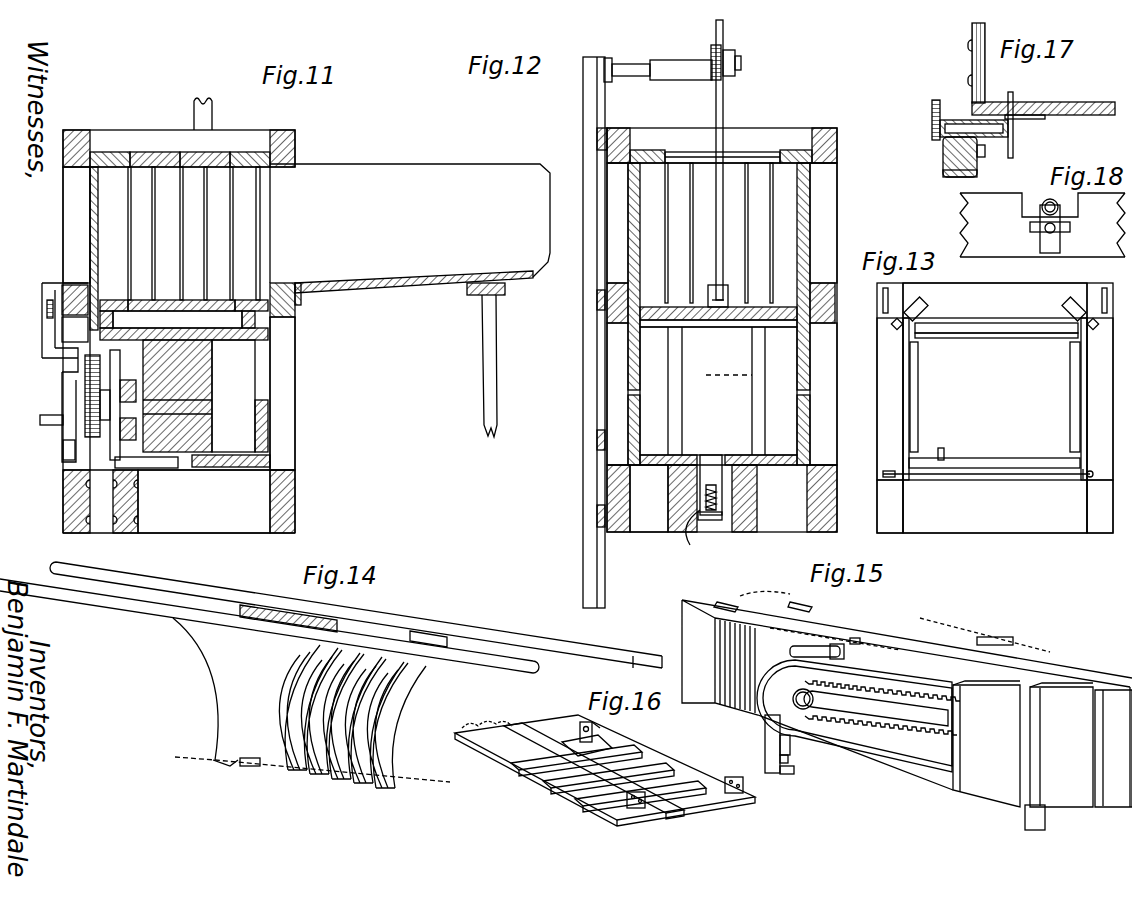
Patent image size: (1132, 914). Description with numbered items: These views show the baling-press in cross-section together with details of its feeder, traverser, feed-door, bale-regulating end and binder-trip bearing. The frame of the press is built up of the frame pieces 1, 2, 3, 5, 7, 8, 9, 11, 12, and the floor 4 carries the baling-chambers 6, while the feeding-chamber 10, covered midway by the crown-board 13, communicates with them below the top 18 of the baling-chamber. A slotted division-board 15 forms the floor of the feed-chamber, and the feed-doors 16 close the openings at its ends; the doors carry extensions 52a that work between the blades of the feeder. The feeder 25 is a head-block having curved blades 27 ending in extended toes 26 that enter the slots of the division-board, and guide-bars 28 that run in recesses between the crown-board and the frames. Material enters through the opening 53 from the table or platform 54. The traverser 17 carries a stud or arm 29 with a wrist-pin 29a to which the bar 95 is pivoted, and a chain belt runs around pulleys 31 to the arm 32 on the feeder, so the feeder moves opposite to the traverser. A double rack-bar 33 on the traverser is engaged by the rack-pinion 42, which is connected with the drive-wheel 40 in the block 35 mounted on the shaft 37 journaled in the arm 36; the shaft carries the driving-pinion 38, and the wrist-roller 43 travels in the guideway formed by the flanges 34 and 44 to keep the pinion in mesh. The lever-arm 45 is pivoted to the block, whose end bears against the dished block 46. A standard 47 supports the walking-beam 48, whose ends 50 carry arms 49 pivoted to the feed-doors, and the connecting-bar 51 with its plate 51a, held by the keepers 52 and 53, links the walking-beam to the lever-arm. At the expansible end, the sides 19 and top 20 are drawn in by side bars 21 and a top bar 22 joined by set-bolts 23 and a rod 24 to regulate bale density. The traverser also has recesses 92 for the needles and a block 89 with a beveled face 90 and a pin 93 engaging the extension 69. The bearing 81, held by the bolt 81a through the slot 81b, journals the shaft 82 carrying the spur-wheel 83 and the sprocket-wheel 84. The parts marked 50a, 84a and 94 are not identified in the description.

In FIG. 11, the frame-piece 1 is at (63, 512).
In FIG. 12, the frame-piece 1 is at (645, 520).
In FIG. 17, the frame-piece 1 is at (950, 178).
In FIG. 18, the frame-piece 1 is at (1042, 225).
In FIG. 13, the frame-piece 1 is at (995, 506).
In FIG. 11, the frame 2 is at (204, 501).
In FIG. 12, the frame 2 is at (649, 498).
In FIG. 13, the frame 2 is at (995, 506).
In FIG. 11, the frame 3 is at (138, 510).
In FIG. 12, the frame 3 is at (668, 506).
In FIG. 11, the floor 4 is at (215, 467).
In FIG. 12, the floor 4 is at (692, 456).
In FIG. 17, the floor 4 is at (1078, 102).
In FIG. 13, the floor 4 is at (988, 461).
In FIG. 11, the frame 5 is at (282, 393).
In FIG. 12, the frame 5 is at (722, 394).
In FIG. 13, the frame 5 is at (995, 399).
In FIG. 11, the baling-chambers 6 is at (62, 326).
In FIG. 12, the baling-chambers 6 is at (628, 343).
In FIG. 17, the baling-chambers 6 is at (972, 61).
In FIG. 11, the frame 7 is at (62, 290).
In FIG. 12, the frame 7 is at (612, 286).
In FIG. 13, the frame 7 is at (883, 312).
In FIG. 13, the frame 8 is at (995, 300).
In FIG. 11, the frame 9 is at (76, 225).
In FIG. 12, the frame 9 is at (722, 223).
In FIG. 11, the feeding-chamber 10 is at (90, 213).
In FIG. 11, the frames 11 is at (88, 143).
In FIG. 12, the frames 11 is at (620, 131).
In FIG. 11, the frame 12 is at (156, 155).
In FIG. 12, the frame 12 is at (720, 148).
In FIG. 11, the crown-board 13 is at (198, 157).
In FIG. 12, the crown-board 13 is at (690, 152).
In FIG. 12, the slotted division-board 15 is at (735, 296).
In FIG. 12, the feed-doors 16 is at (706, 324).
In FIG. 16, the feed-doors 16 is at (604, 732).
In FIG. 11, the traverser 17 is at (196, 386).
In FIG. 12, the traverser 17 is at (718, 391).
In FIG. 15, the traverser 17 is at (907, 703).
In FIG. 11, the top of the baling-chamber 18 is at (184, 325).
In FIG. 13, the sides of extended portion 19 is at (918, 396).
In FIG. 13, the top of extended portion 20 is at (988, 338).
In FIG. 13, the side bars 21 is at (903, 388).
In FIG. 13, the top bar 22 is at (986, 323).
In FIG. 13, the set-bolts 23 is at (920, 305).
In FIG. 11, the rod 24 is at (181, 298).
In FIG. 13, the rod 24 is at (968, 478).
In FIG. 11, the feeder 25 is at (180, 207).
In FIG. 12, the feeder 25 is at (719, 233).
In FIG. 14, the feeder 25 is at (272, 676).
In FIG. 14, the extended toes 26 is at (213, 762).
In FIG. 11, the curved blades 27 is at (181, 244).
In FIG. 12, the curved blades 27 is at (691, 214).
In FIG. 14, the curved blades 27 is at (213, 698).
In FIG. 11, the guide-bars 28 is at (116, 158).
In FIG. 12, the guide-bars 28 is at (721, 148).
In FIG. 14, the guide-bars 28 is at (55, 570).
In FIG. 11, the stud or arm 29 is at (75, 329).
In FIG. 15, the stud or arm 29 is at (1000, 640).
In FIG. 15, the wrist-pin 29a is at (815, 646).
In FIG. 11, the pulleys 31 is at (184, 298).
In FIG. 14, the arm 32 is at (250, 767).
In FIG. 11, the double rack-bar 33 is at (212, 415).
In FIG. 15, the double rack-bar 33 is at (900, 740).
In FIG. 11, the flange 34 is at (212, 400).
In FIG. 15, the flange 34 is at (920, 698).
In FIG. 11, the block 35 is at (85, 390).
In FIG. 11, the arm 36 is at (120, 432).
In FIG. 11, the shaft 37 is at (40, 420).
In FIG. 11, the driving-pinion 38 is at (63, 446).
In FIG. 11, the drive-wheel 40 is at (110, 368).
In FIG. 11, the rack-pinion 42 is at (100, 410).
In FIG. 11, the wrist-roller 43 is at (200, 362).
In FIG. 11, the flange 44 is at (135, 376).
In FIG. 15, the flange 44 is at (790, 700).
In FIG. 11, the lever-arm 45 is at (62, 405).
In FIG. 12, the lever-arm 45 is at (597, 448).
In FIG. 11, the block 46 is at (42, 358).
In FIG. 11, the standard 47 is at (212, 112).
In FIG. 12, the walking-beam 48 is at (741, 53).
In FIG. 12, the arms 49 is at (723, 110).
In FIG. 12, the ends of walking-beam 50 is at (628, 64).
In FIG. 12, the sleeve 50a is at (672, 60).
In FIG. 12, the connecting-bar 51 is at (583, 101).
In FIG. 12, the plate 51a is at (602, 206).
In FIG. 12, the keeper 52 is at (597, 135).
In FIG. 16, the extensions 52a is at (510, 722).
In FIG. 11, the opening 53 is at (410, 220).
In FIG. 12, the opening 53 is at (597, 518).
In FIG. 11, the table or platform 54 is at (410, 283).
In FIG. 12, the extension 69 is at (690, 545).
In FIG. 17, the bearing 81 is at (946, 160).
In FIG. 18, the bearing 81 is at (1043, 203).
In FIG. 17, the bolt 81a is at (982, 156).
In FIG. 18, the bolt 81a is at (1056, 232).
In FIG. 18, the slot 81b is at (1070, 226).
In FIG. 17, the shaft 82 is at (951, 120).
In FIG. 17, the spur-wheel 83 is at (1013, 100).
In FIG. 13, the spur-wheel 83 is at (942, 448).
In FIG. 17, the sprocket-wheel 84 is at (934, 142).
In FIG. 15, the lug 84a is at (793, 760).
In FIG. 12, the block 89 is at (728, 460).
In FIG. 15, the block 89 is at (765, 730).
In FIG. 15, the engaging face 90 is at (790, 745).
In FIG. 12, the recesses 92 is at (682, 376).
In FIG. 15, the recesses 92 is at (760, 592).
In FIG. 12, the pin 93 is at (710, 521).
In FIG. 15, the pin 93 is at (794, 770).
In FIG. 12, the spring 94 is at (716, 495).
In FIG. 11, the bar 95 is at (45, 307).
In FIG. 12, the bar 95 is at (597, 300).